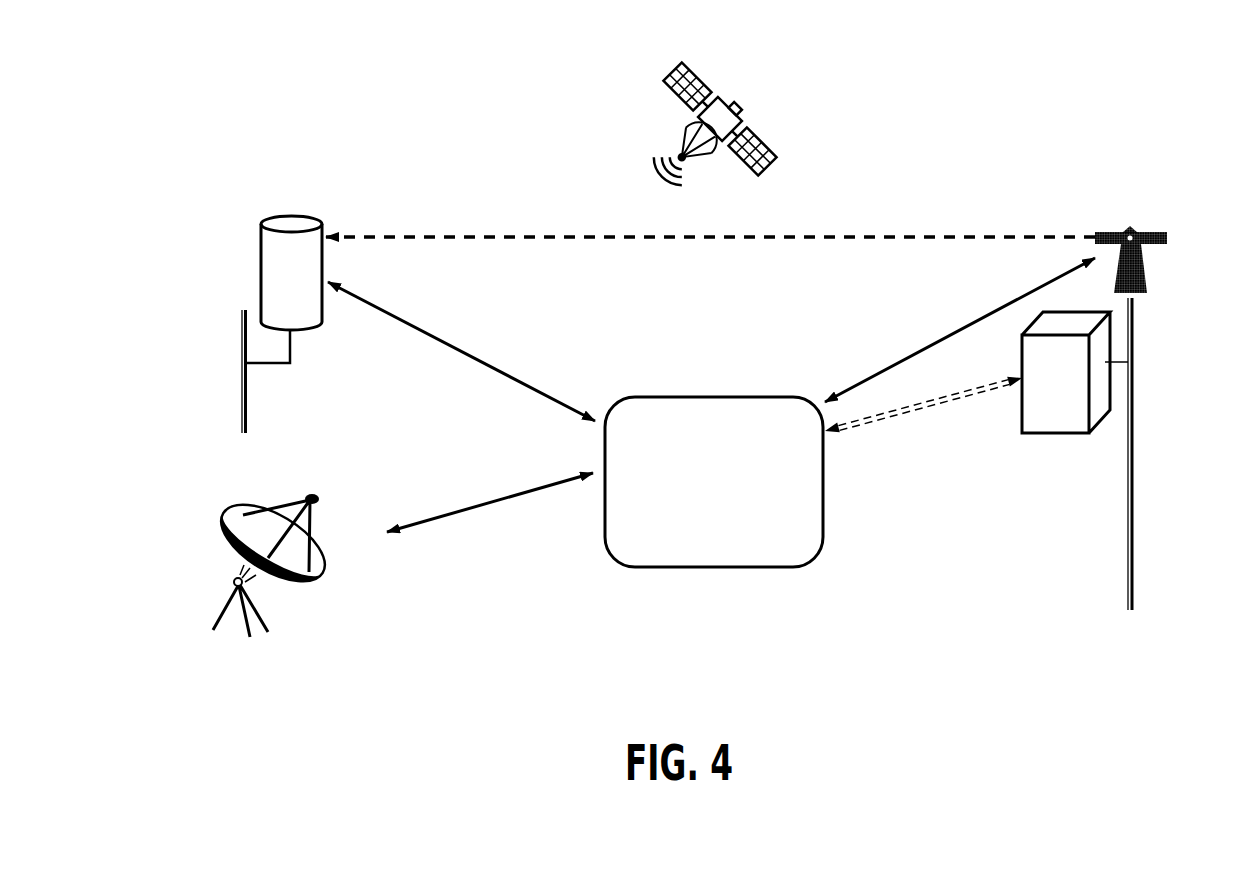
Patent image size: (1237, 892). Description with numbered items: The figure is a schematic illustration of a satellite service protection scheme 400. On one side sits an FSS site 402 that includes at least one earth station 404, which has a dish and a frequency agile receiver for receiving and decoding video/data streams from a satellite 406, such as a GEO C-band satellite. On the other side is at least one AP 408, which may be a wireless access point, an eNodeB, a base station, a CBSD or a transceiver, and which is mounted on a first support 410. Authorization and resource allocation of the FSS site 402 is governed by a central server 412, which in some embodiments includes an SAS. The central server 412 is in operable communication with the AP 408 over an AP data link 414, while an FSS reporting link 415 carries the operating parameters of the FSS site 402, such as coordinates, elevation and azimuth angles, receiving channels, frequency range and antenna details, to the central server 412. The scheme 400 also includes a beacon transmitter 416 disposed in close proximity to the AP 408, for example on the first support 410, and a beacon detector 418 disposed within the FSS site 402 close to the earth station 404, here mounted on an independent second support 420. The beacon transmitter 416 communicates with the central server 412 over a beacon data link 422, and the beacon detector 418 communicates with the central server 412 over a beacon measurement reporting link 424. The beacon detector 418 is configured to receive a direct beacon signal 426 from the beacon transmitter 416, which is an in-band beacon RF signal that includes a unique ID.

The satellite service protection scheme 400 is at (988, 189).
The FSS site 402 is at (298, 534).
The earth station 404 is at (233, 507).
The satellite 406 is at (672, 100).
The AP 408 is at (1034, 414).
The first support 410 is at (1133, 490).
The central server 412 is at (695, 527).
The AP data link 414 is at (925, 408).
The FSS reporting link 415 is at (490, 502).
The beacon transmitter 416 is at (1145, 278).
The beacon detector 418 is at (273, 313).
The second support 420 is at (243, 347).
The beacon data link 422 is at (918, 348).
The beacon measurement reporting link 424 is at (432, 336).
The direct beacon signal 426 is at (520, 235).